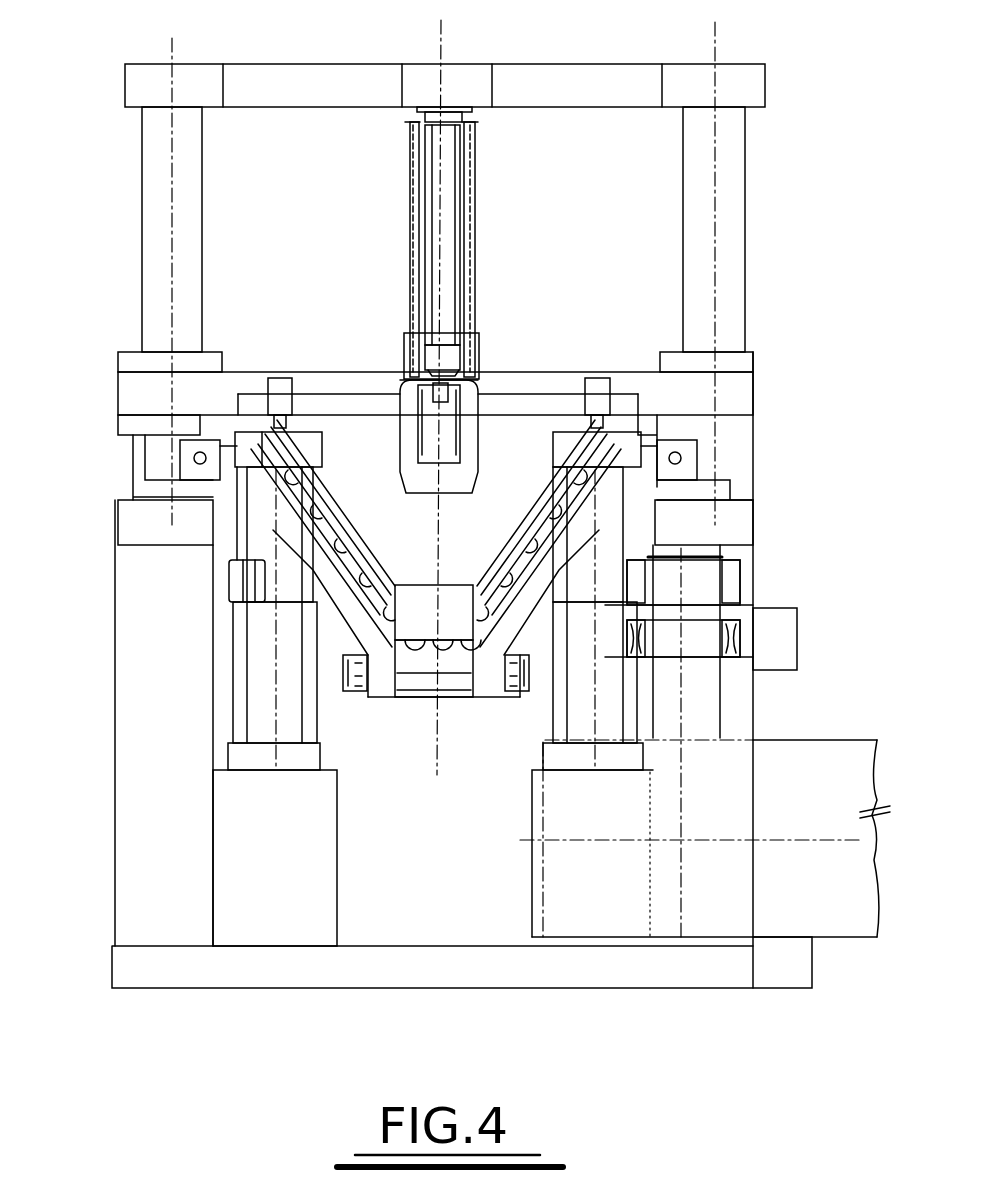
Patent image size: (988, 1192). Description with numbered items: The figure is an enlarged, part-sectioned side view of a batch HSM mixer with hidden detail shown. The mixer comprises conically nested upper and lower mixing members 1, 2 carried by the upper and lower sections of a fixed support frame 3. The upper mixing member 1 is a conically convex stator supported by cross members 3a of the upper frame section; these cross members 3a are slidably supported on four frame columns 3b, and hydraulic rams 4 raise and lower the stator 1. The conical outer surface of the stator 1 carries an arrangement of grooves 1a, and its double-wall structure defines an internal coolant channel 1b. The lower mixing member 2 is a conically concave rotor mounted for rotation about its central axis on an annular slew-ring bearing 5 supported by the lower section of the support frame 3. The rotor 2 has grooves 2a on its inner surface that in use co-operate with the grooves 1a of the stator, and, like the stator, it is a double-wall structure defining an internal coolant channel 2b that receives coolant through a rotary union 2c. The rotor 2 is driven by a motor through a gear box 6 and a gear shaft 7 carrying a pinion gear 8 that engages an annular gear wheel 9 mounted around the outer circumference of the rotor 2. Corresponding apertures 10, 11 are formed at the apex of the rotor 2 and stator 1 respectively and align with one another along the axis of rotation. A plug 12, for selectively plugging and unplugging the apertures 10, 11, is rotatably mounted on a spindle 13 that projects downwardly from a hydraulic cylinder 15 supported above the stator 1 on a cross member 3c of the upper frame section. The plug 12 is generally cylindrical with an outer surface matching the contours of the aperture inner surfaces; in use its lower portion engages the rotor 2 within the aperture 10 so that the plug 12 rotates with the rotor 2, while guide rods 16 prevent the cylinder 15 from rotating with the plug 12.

The upper mixing member 1 is at (527, 500).
The grooves 1a is at (332, 525).
The internal coolant channel 1b is at (318, 488).
The lower mixing member 2 is at (537, 612).
The grooves 2a is at (502, 655).
The internal coolant channel 2b is at (598, 475).
The rotary union 2c is at (343, 672).
The support frame 3 is at (158, 728).
The cross members 3a is at (320, 380).
The frame columns 3b is at (168, 272).
The cross member 3c is at (465, 90).
The hydraulic rams 4 is at (280, 717).
The annular slew-ring bearing 5 is at (660, 432).
The gear box 6 is at (808, 812).
The gear shaft 7 is at (690, 636).
The pinion gear 8 is at (722, 572).
The annular gear wheel 9 is at (240, 573).
The aperture 10 is at (433, 683).
The aperture 11 is at (408, 602).
The plug 12 is at (466, 402).
The spindle 13 is at (425, 410).
The hydraulic cylinder 15 is at (456, 236).
The guide rods 16 is at (413, 190).